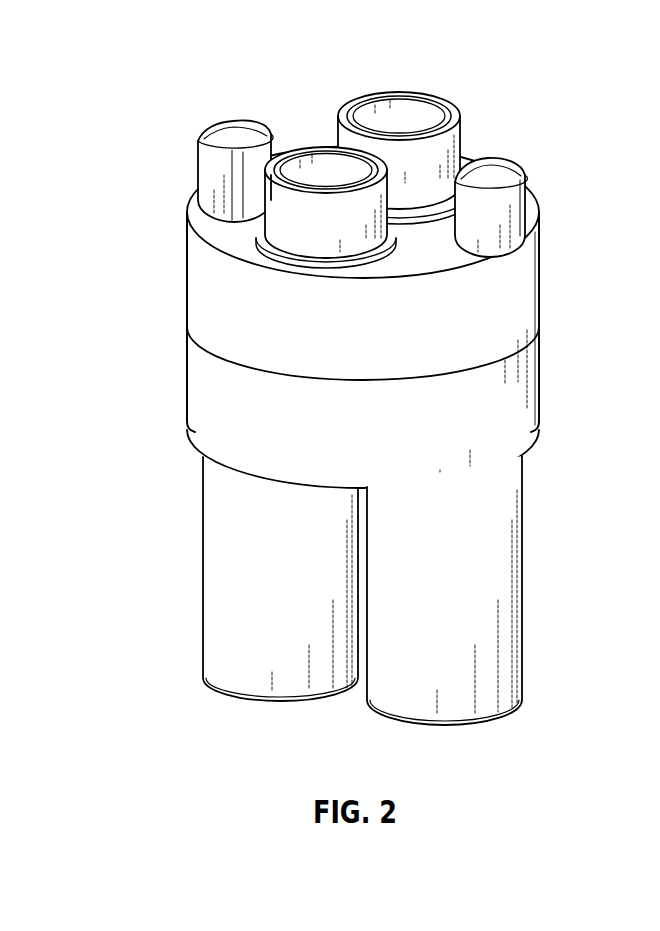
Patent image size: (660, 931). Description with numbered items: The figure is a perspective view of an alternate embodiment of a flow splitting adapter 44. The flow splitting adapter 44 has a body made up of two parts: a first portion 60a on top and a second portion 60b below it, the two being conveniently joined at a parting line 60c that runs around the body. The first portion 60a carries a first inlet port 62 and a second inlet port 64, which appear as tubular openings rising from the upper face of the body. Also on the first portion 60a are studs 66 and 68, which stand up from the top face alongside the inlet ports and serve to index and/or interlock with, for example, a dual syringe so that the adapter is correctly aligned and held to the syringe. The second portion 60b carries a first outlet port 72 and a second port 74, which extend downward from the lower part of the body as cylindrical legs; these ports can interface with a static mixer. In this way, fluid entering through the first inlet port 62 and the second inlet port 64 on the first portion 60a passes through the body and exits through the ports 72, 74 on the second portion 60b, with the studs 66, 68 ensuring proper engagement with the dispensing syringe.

The flow splitting adapter 44 is at (551, 424).
The first portion 60a is at (540, 268).
The second portion 60b is at (540, 392).
The parting line 60c is at (538, 333).
The first inlet port 62 is at (317, 166).
The second inlet port 64 is at (410, 106).
The stud 66 is at (229, 137).
The stud 68 is at (495, 166).
The first outlet port 72 is at (218, 688).
The second outlet port 74 is at (402, 718).